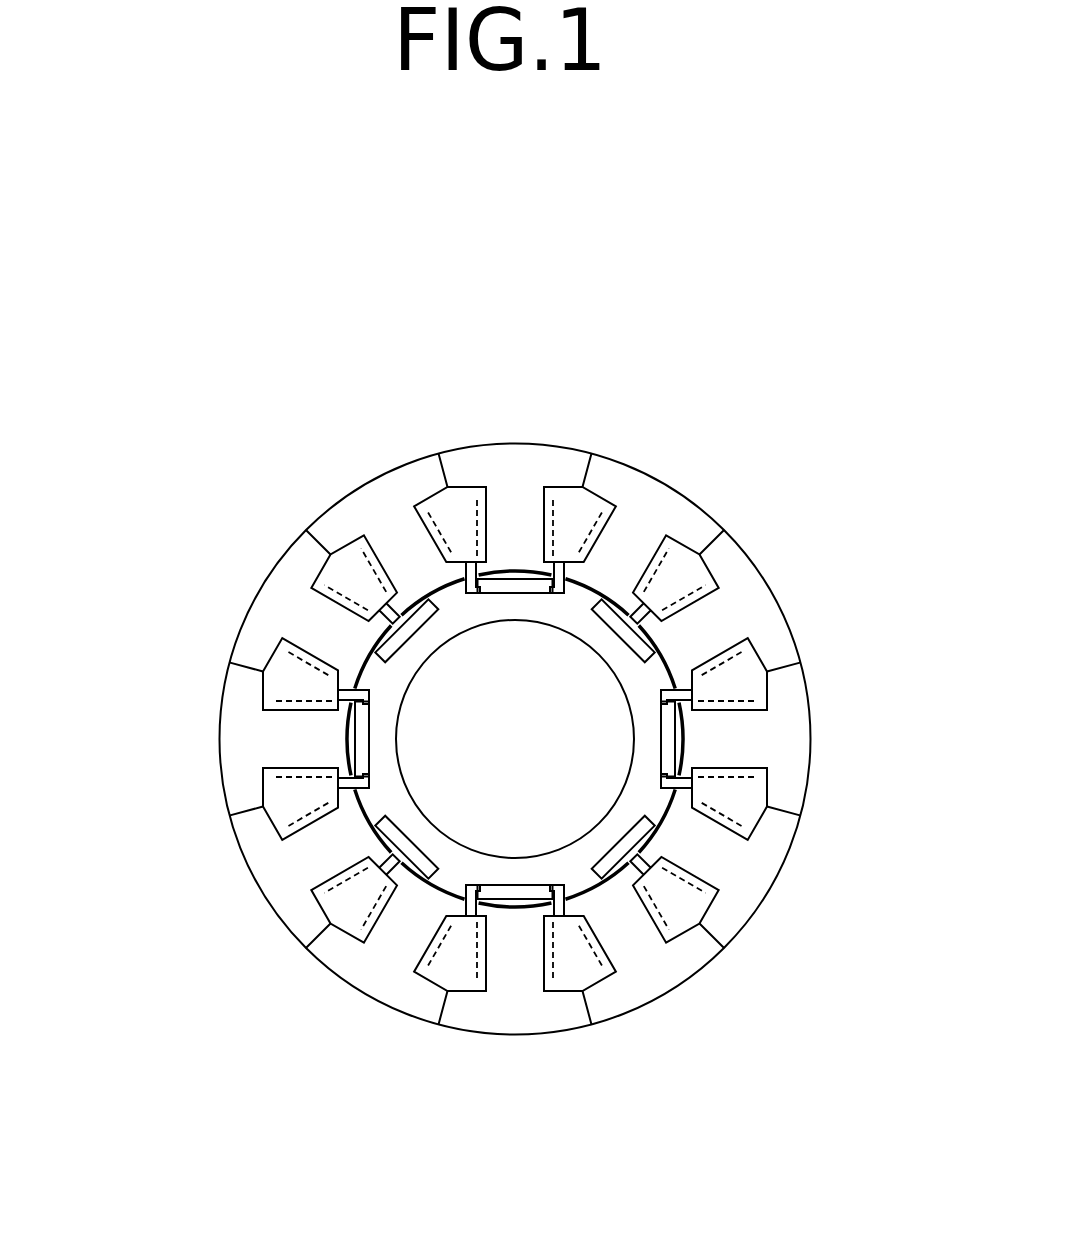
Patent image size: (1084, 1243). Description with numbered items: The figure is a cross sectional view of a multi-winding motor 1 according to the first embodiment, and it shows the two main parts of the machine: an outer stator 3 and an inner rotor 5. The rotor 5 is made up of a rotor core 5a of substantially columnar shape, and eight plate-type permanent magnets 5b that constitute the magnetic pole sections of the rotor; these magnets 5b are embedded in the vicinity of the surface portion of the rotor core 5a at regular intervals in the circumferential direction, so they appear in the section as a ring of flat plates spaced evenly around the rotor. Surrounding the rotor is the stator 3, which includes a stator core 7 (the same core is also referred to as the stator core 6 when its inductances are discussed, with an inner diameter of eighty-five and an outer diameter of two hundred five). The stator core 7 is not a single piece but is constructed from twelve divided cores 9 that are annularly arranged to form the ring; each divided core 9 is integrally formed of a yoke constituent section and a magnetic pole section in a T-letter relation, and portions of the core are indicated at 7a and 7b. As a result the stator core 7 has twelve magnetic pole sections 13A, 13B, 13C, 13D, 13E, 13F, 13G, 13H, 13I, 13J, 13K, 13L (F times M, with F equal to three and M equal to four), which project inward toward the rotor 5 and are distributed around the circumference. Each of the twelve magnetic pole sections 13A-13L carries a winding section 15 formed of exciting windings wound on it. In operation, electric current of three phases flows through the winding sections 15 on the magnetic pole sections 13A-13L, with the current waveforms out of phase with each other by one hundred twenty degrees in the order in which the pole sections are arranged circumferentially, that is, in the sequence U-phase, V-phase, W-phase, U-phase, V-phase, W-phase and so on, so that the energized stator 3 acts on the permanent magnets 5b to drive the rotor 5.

The multi-winding motor 1 is at (198, 595).
The stator 3 is at (723, 512).
The rotor 5 is at (613, 585).
The rotor core 5a is at (512, 690).
The permanent magnet 5b is at (502, 583).
The stator core 6 is at (720, 622).
The stator core 7 is at (610, 443).
The insulator portion 7a is at (392, 492).
The insulator portion 7b is at (407, 558).
The divided core 9 is at (467, 433).
The magnetic pole section 13A is at (505, 507).
The magnetic pole section 13B is at (628, 527).
The magnetic pole section 13C is at (718, 610).
The magnetic pole section 13D is at (750, 730).
The magnetic pole section 13E is at (720, 862).
The magnetic pole section 13F is at (630, 933).
The magnetic pole section 13G is at (532, 968).
The magnetic pole section 13H is at (398, 930).
The magnetic pole section 13I is at (267, 895).
The magnetic pole section 13J is at (278, 742).
The magnetic pole section 13K is at (290, 622).
The magnetic pole section 13L is at (388, 522).
The winding section 15 is at (433, 500).